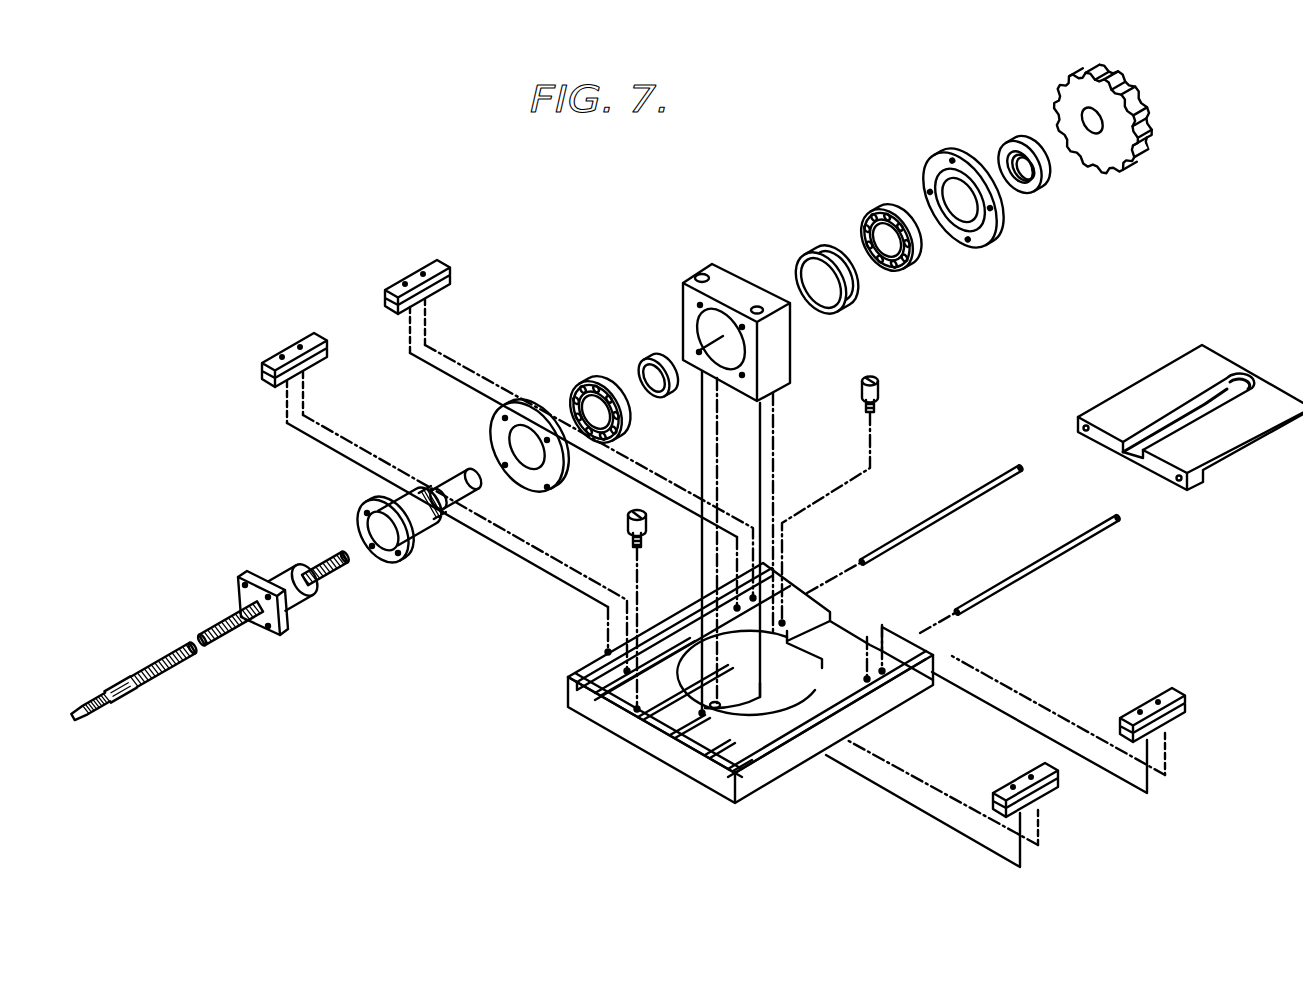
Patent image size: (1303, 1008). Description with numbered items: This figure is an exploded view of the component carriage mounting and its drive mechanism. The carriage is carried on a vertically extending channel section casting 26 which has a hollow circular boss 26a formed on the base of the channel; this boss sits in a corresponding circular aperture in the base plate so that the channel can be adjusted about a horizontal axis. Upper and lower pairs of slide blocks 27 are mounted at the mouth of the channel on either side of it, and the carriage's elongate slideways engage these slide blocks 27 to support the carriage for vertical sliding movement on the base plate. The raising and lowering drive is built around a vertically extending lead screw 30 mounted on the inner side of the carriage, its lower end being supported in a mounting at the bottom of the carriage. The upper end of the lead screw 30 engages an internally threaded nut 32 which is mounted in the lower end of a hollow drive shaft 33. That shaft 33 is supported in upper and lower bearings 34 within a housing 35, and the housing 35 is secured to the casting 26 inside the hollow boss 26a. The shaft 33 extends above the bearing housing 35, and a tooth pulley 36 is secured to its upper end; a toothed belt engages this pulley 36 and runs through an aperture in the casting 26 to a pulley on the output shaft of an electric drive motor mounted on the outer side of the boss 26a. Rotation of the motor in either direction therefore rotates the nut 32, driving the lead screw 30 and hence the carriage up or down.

The channel section casting 26 is at (772, 760).
The hollow circular boss 26a is at (812, 762).
The slide blocks 27 is at (292, 351).
The lead screw 30 is at (160, 662).
The internally threaded nut 32 is at (281, 583).
The hollow drive shaft 33 is at (406, 505).
The bearings 34 is at (590, 383).
The housing 35 is at (726, 290).
The tooth pulley 36 is at (1074, 105).